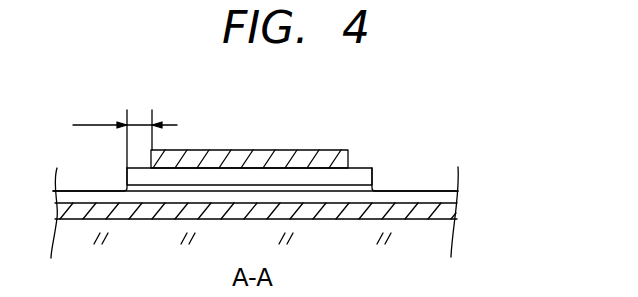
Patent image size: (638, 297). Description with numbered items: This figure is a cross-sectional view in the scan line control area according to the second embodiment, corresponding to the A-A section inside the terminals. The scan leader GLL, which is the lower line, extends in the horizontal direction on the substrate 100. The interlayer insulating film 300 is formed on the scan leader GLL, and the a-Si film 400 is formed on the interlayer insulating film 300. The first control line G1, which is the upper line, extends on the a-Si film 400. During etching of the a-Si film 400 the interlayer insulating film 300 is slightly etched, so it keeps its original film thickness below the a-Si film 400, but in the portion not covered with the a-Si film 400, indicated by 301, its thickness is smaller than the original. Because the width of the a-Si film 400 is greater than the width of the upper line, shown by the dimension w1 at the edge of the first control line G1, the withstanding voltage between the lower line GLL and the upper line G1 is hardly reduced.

The substrate 100 is at (442, 238).
The scan leader GLL is at (433, 210).
The portion of the interlayer insulating film not covered with the a-Si film 301 is at (452, 192).
The a-Si film 400 is at (372, 175).
The interlayer insulating film 300 is at (303, 180).
The first control line G1 is at (350, 157).
The width w1 is at (125, 134).